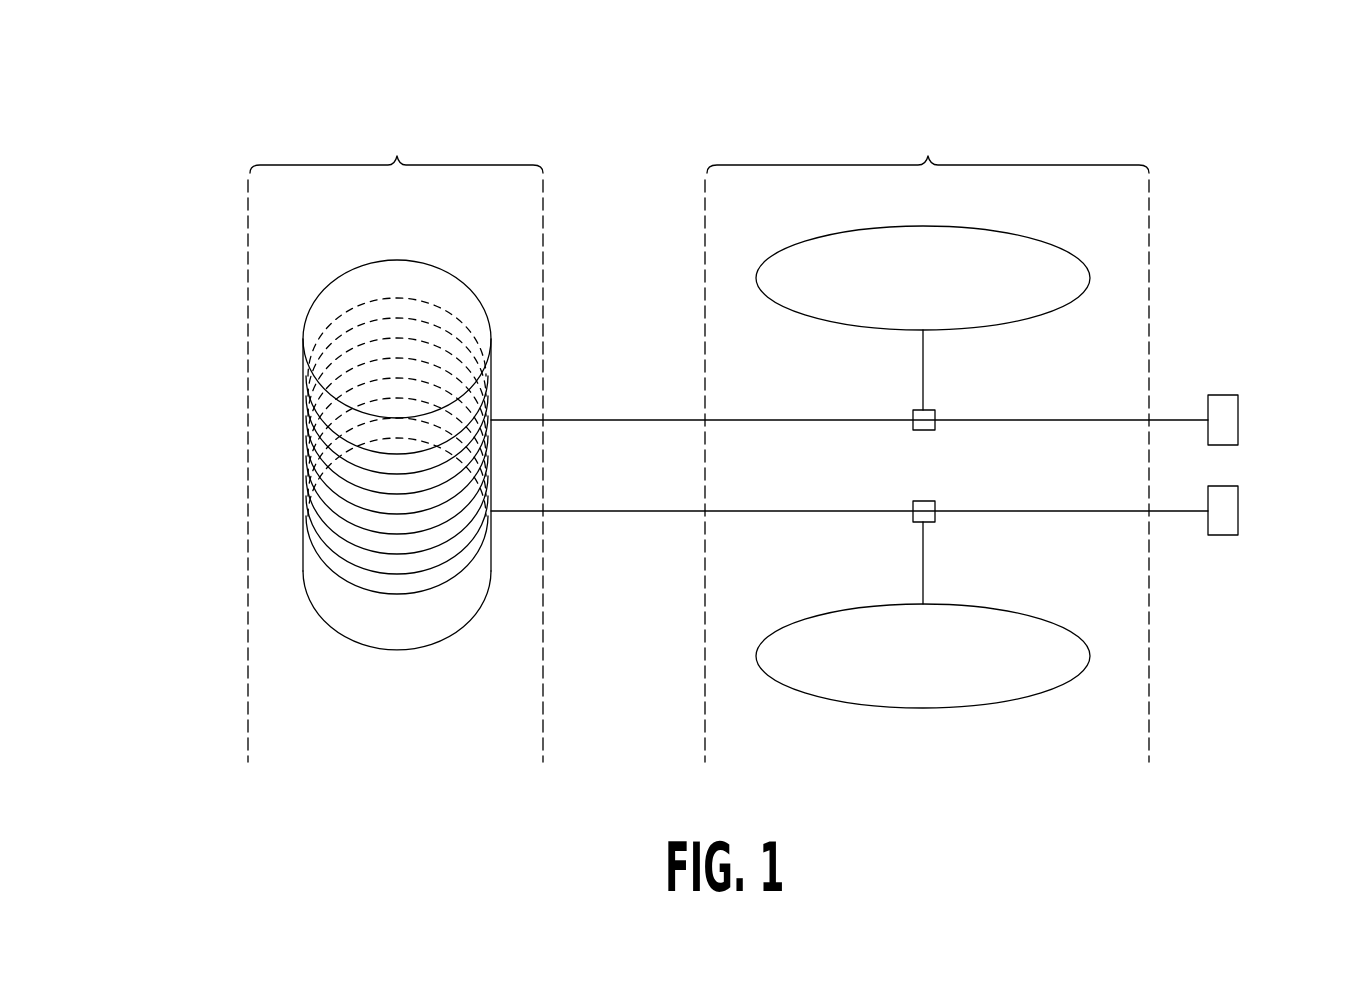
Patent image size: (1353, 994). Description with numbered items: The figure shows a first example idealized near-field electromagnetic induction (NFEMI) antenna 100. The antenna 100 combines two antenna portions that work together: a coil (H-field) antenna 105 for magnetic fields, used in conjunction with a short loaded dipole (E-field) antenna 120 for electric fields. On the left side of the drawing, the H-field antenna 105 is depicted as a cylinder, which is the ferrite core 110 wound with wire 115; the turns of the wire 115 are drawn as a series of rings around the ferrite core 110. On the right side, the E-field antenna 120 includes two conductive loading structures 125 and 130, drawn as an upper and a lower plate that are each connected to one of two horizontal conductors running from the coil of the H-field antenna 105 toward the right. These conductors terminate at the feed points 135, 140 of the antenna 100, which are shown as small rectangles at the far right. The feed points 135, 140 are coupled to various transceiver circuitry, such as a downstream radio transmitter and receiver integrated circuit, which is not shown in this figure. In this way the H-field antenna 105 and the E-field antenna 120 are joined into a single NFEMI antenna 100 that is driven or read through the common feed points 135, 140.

The near-field electromagnetic induction (NFEMI) antenna 100 is at (152, 138).
The coil (H-field) antenna 105 is at (395, 440).
The ferrite core 110 is at (449, 270).
The wire 115 is at (352, 583).
The short loaded dipole (E-field) antenna 120 is at (927, 440).
The conductive loading structure 125 is at (1048, 311).
The conductive loading structure 130 is at (1045, 620).
The feed point 135 is at (1238, 418).
The feed point 140 is at (1238, 508).